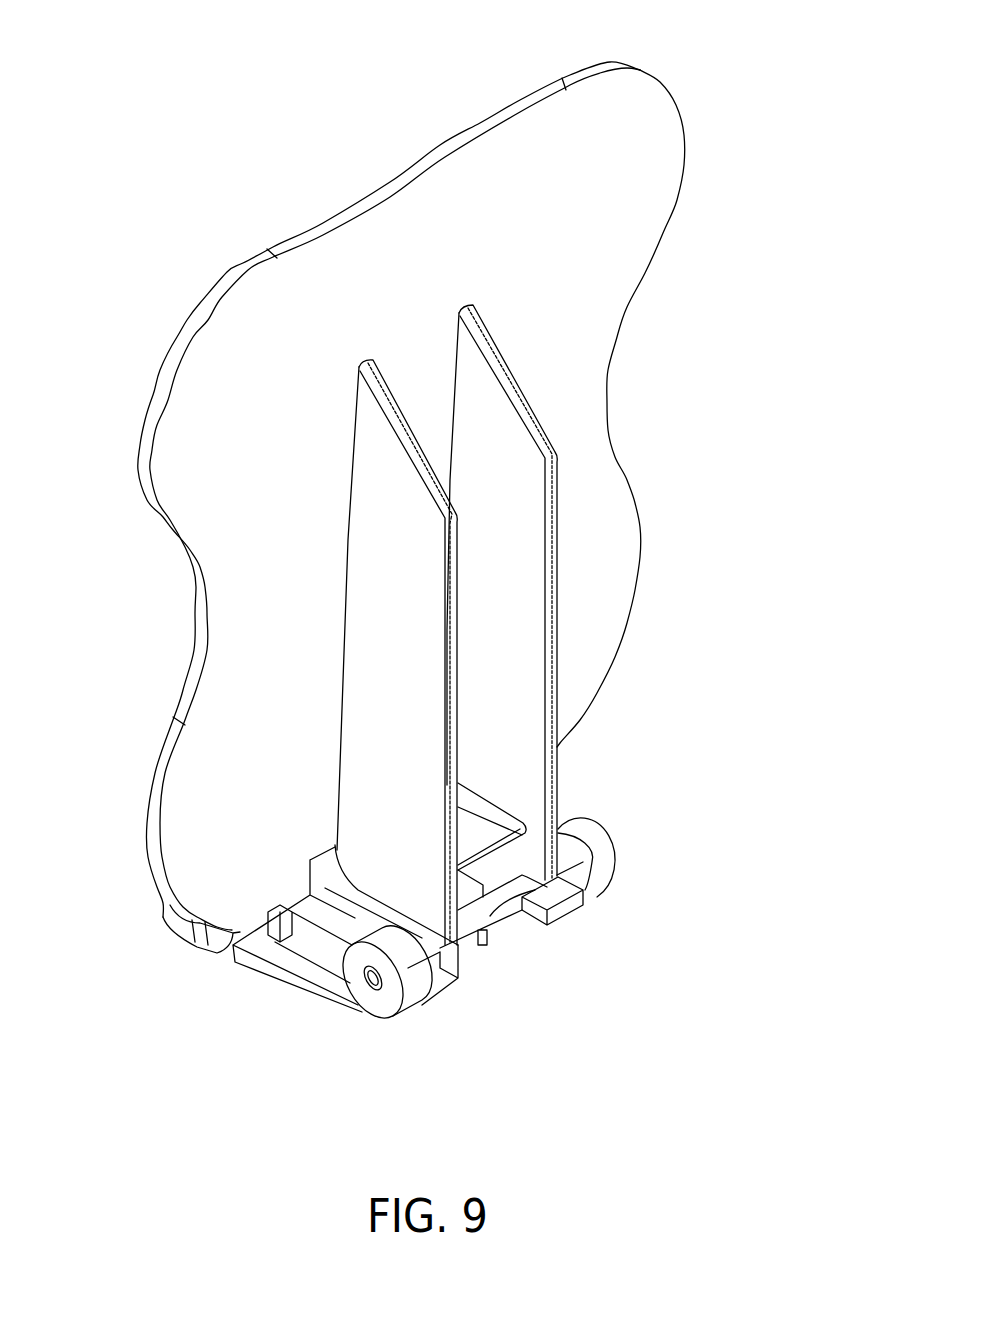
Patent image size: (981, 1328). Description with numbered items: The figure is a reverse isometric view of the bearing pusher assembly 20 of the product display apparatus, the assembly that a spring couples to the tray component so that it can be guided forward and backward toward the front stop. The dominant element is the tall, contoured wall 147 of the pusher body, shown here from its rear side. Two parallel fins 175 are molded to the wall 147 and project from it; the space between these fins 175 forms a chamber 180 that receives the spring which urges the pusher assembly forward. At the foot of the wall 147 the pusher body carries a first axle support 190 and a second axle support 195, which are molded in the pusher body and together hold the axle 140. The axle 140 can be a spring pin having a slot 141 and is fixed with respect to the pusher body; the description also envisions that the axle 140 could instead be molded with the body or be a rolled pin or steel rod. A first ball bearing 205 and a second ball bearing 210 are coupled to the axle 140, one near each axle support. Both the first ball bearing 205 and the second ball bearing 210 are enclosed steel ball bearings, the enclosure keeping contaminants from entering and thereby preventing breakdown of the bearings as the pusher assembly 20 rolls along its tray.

The bearing pusher assembly 20 is at (120, 770).
The wall 147 is at (545, 145).
The fins 175 is at (412, 427).
The chamber 180 is at (513, 518).
The first ball bearing 205 is at (583, 823).
The second ball bearing 210 is at (395, 997).
The slot 141 is at (368, 972).
The second axle support 195 is at (442, 968).
The first axle support 190 is at (590, 879).
The axle 140 is at (578, 895).